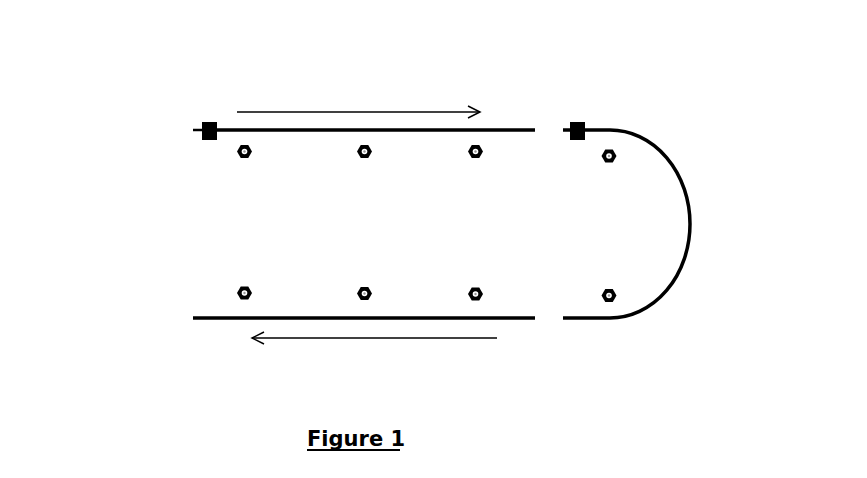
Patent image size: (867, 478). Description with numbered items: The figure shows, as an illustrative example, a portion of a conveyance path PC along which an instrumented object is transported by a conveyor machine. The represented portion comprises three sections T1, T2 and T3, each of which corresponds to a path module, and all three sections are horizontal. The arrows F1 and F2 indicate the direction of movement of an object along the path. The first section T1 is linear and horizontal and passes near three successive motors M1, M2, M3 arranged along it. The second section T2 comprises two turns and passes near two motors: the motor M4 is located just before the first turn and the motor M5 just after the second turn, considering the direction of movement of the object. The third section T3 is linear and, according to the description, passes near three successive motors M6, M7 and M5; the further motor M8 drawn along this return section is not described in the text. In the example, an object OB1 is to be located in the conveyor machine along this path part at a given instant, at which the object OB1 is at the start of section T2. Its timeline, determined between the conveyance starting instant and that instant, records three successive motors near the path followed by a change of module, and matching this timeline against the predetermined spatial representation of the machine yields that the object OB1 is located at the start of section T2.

The first section T1 is at (226, 111).
The second section T2 is at (699, 166).
The third section T3 is at (235, 333).
The conveyance path PC is at (128, 318).
The arrow F1 is at (425, 112).
The arrow F2 is at (425, 340).
The object OB1 is at (202, 135).
The motor M1 is at (240, 157).
The motor M2 is at (361, 157).
The motor M3 is at (470, 158).
The motor M4 is at (603, 162).
The motor M5 is at (607, 288).
The motor M6 is at (477, 287).
The motor M7 is at (362, 287).
The marker 8 M8 is at (242, 285).